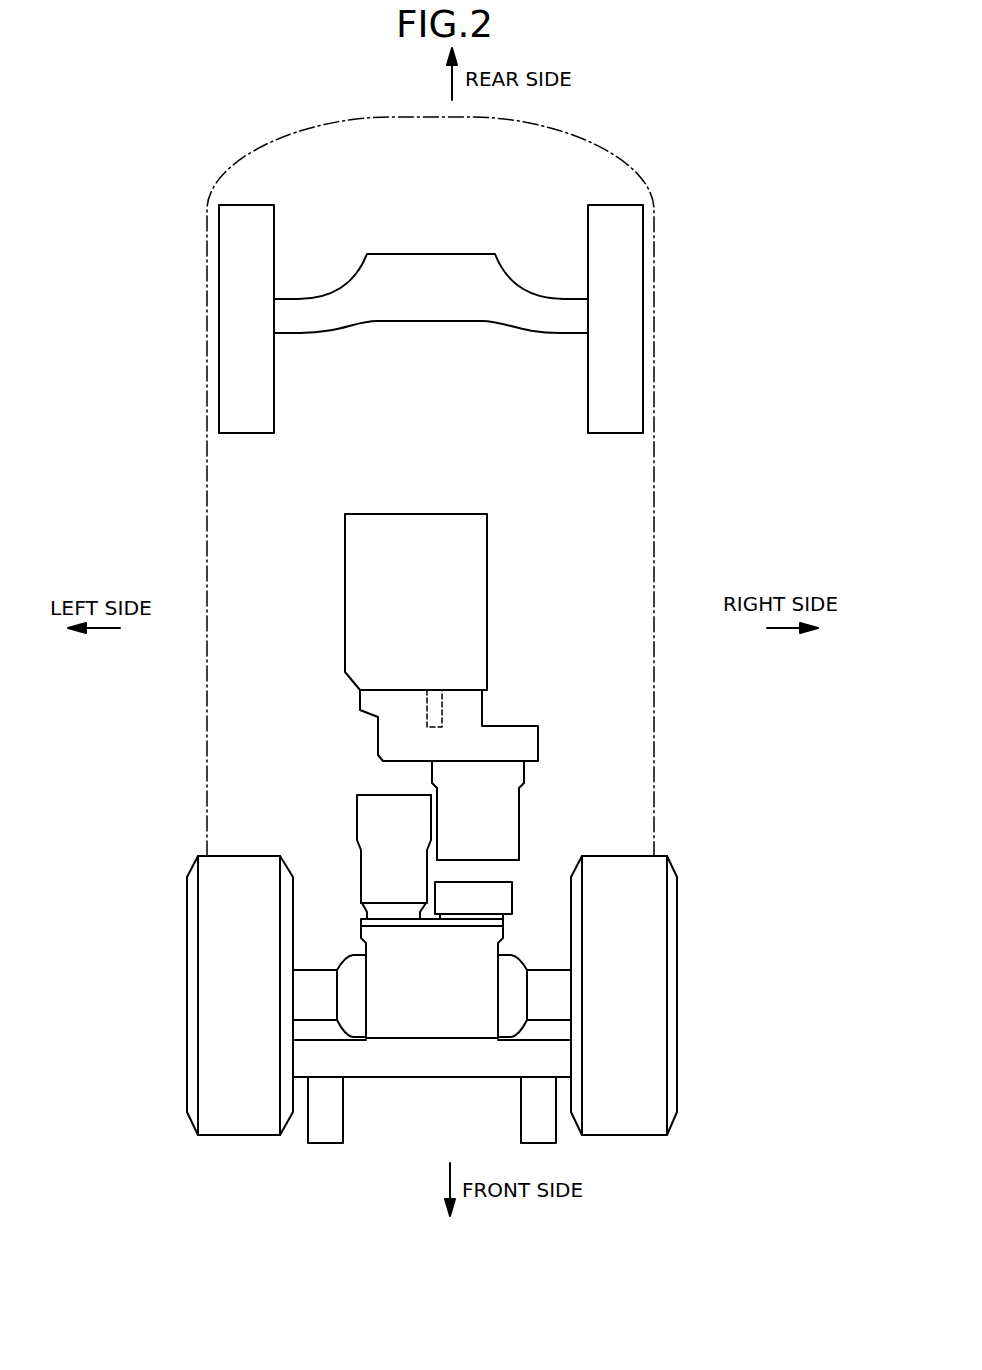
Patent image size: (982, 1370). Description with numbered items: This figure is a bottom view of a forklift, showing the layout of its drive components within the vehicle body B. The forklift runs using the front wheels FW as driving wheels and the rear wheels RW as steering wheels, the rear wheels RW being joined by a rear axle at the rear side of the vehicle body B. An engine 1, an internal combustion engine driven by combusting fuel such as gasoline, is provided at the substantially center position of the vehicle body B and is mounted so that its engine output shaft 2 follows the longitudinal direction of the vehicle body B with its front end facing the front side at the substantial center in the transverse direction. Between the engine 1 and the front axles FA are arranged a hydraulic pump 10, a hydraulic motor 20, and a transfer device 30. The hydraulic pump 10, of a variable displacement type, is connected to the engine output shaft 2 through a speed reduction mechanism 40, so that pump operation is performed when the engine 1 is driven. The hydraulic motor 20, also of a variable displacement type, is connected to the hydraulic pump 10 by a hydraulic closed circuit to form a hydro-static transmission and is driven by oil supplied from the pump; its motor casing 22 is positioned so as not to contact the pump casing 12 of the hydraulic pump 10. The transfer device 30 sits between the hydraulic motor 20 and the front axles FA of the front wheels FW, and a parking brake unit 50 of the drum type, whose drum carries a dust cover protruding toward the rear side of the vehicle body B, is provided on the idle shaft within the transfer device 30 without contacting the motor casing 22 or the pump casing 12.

The engine 1 is at (353, 603).
The engine output shaft 2 is at (428, 708).
The speed reduction mechanism 40 is at (471, 702).
The hydraulic pump 10 is at (500, 818).
The pump casing 12 is at (523, 850).
The hydraulic motor 20 is at (367, 815).
The motor casing 22 is at (357, 872).
The transfer device 30 is at (432, 1027).
The parking brake unit 50 is at (502, 900).
The vehicle body B is at (207, 625).
The rear wheels RW is at (235, 324).
The front wheels FW is at (215, 1042).
The front axles FA is at (310, 977).